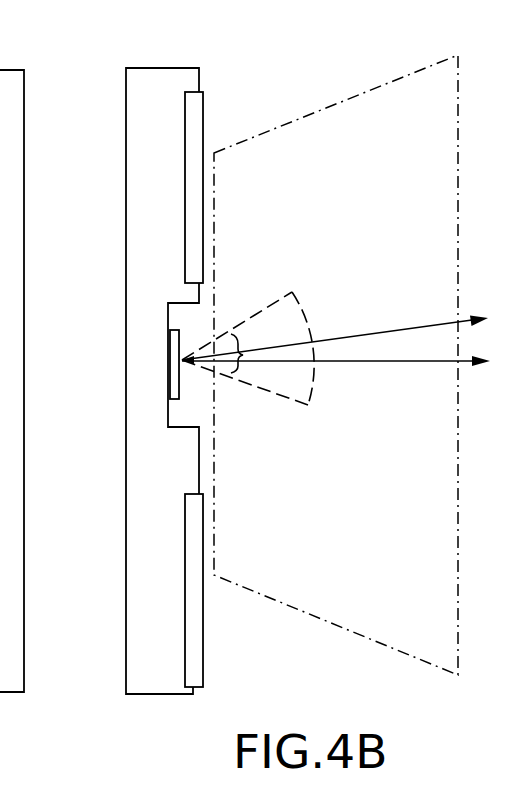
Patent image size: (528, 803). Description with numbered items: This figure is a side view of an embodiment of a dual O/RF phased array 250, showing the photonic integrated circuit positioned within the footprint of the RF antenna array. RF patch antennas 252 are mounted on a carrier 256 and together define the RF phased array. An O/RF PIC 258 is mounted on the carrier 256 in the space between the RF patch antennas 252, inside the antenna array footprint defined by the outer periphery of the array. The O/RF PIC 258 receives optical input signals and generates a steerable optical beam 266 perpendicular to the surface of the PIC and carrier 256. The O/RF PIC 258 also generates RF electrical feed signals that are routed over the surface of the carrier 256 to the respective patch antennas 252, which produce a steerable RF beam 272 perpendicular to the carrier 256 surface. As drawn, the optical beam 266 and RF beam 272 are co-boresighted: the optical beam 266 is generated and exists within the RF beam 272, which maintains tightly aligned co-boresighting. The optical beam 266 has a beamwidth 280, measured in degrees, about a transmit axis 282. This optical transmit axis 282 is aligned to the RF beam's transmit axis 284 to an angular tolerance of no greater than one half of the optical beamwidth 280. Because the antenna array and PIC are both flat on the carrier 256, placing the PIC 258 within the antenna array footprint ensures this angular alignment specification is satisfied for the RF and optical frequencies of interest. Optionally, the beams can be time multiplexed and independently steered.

The dual O/RF phased array 250 is at (30, 51).
The RF patch antennas 252 is at (185, 210).
The carrier 256 is at (170, 100).
The O/RF PIC 258 is at (175, 387).
The steerable optical beam 266 is at (272, 303).
The steerable RF beam 272 is at (282, 123).
The beamwidth 280 is at (243, 355).
The transmit axis 282 is at (383, 333).
The transmit axis 284 is at (387, 365).